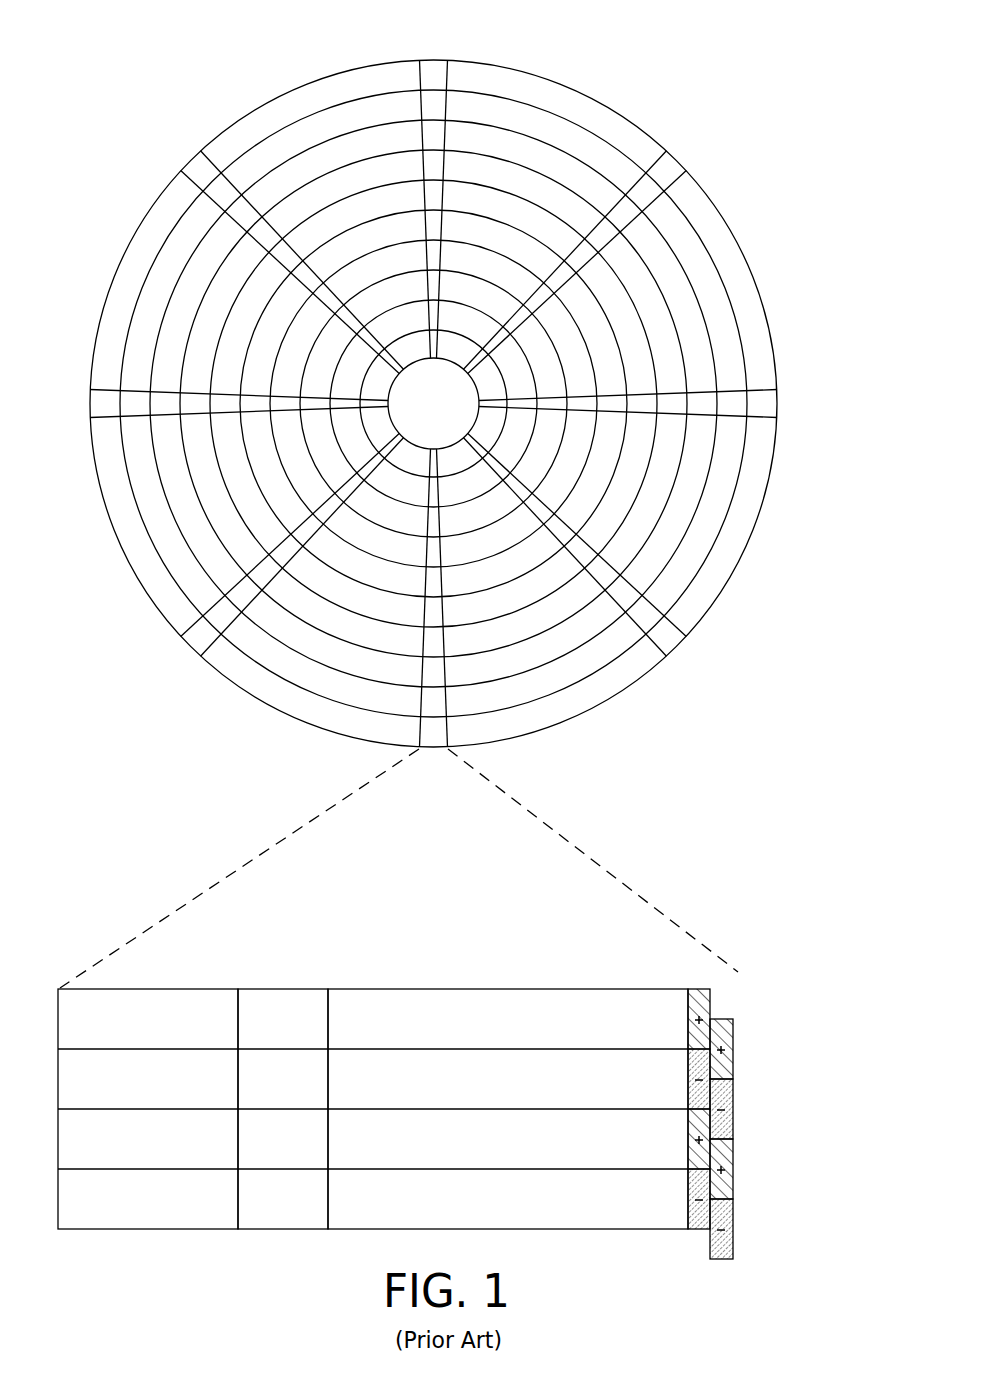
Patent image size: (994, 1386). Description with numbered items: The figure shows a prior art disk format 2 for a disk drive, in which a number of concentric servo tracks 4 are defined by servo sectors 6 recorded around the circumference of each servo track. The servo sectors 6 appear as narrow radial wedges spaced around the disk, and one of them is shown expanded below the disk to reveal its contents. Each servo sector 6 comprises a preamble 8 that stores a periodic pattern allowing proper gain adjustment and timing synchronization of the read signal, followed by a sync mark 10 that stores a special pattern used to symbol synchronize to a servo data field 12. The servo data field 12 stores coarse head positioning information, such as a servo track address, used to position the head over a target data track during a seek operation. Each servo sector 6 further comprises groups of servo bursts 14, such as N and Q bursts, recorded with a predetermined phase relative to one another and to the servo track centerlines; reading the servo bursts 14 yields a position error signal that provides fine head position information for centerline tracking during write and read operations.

The disk format 2 is at (180, 65).
The servo tracks 4 is at (550, 130).
The servo sectors 6 is at (434, 416).
The preamble 8 is at (156, 988).
The sync mark 10 is at (287, 988).
The servo data field 12 is at (493, 988).
The servo bursts 14 is at (726, 988).